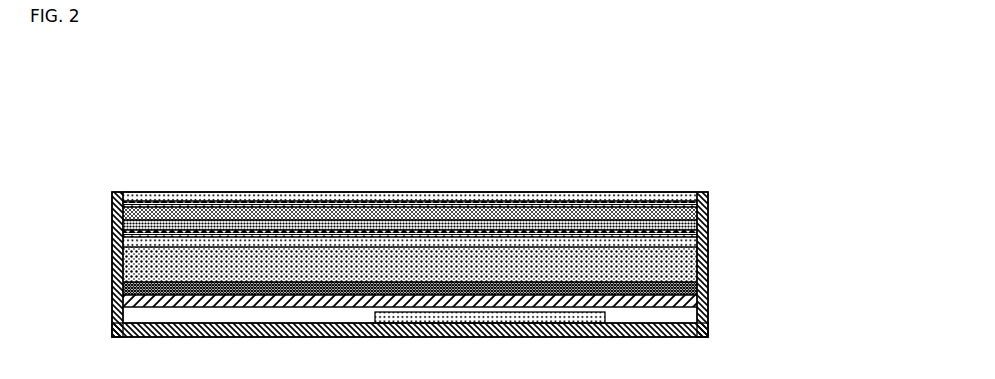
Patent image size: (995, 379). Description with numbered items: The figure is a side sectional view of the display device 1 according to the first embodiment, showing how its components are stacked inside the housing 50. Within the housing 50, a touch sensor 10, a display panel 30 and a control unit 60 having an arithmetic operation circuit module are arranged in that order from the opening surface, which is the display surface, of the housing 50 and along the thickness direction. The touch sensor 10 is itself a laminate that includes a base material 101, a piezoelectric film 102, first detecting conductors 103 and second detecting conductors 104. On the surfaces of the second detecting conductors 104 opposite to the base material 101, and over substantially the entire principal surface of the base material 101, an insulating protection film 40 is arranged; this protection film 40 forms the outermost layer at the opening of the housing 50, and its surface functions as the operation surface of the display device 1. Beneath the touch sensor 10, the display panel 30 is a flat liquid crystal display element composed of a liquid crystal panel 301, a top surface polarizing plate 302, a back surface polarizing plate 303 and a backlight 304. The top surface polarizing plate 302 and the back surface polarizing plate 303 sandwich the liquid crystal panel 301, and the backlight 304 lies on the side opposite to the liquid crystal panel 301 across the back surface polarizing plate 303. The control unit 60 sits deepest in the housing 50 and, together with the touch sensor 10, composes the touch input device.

The display device 1 is at (655, 128).
The touch sensor 10 is at (77, 172).
The base material 101 is at (111, 209).
The piezoelectric film 102 is at (111, 226).
The first detecting conductors 103 is at (111, 238).
The second detecting conductors 104 is at (112, 193).
The display panel 30 is at (457, 275).
The liquid crystal panel 301 is at (708, 271).
The top surface polarizing plate 302 is at (708, 244).
The back surface polarizing plate 303 is at (708, 292).
The backlight 304 is at (708, 307).
The protection film 40 is at (681, 192).
The housing 50 is at (684, 337).
The control unit 60 is at (567, 337).